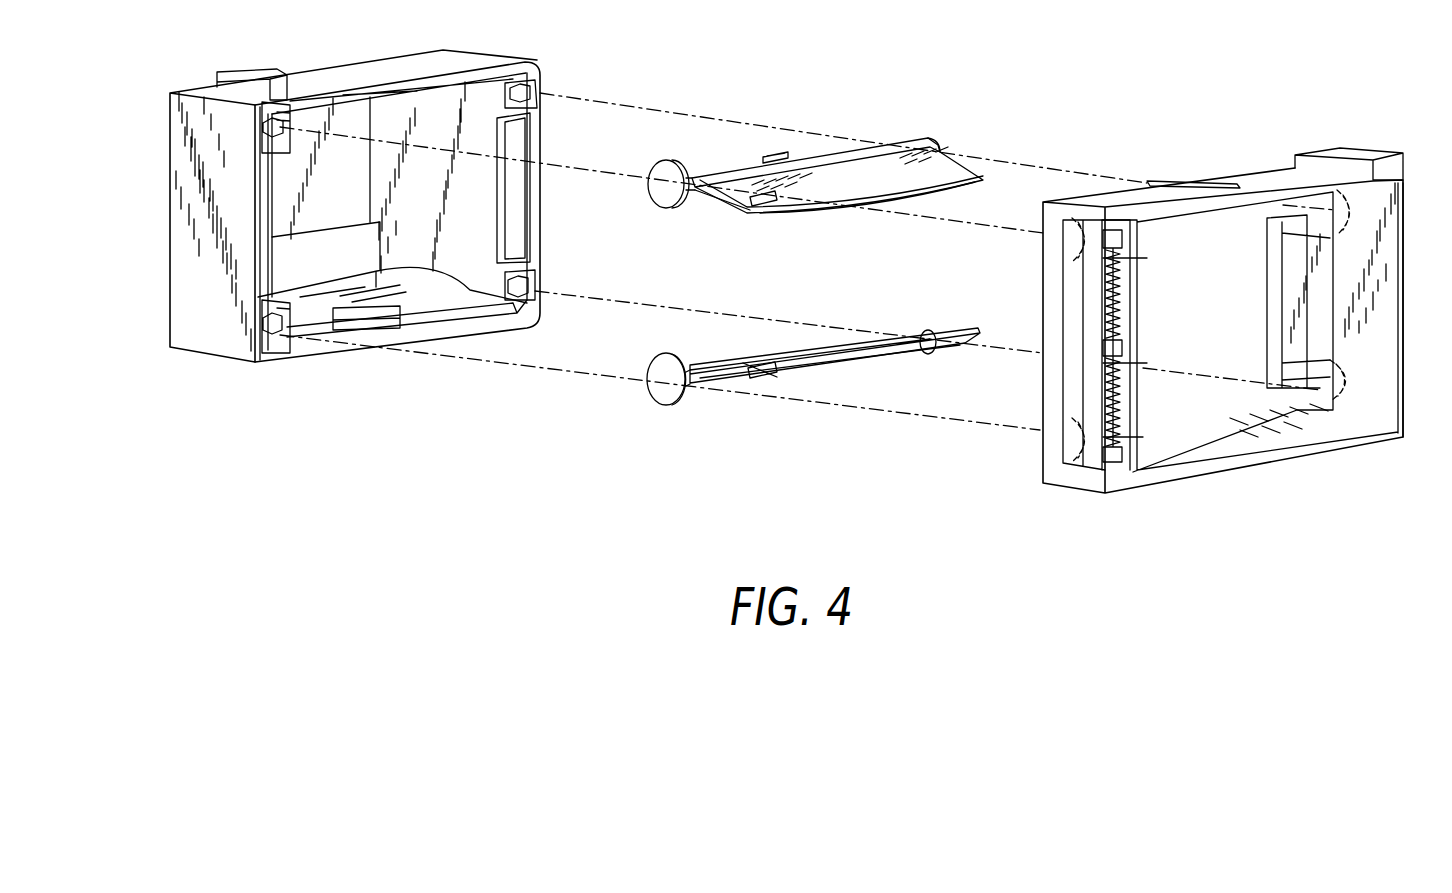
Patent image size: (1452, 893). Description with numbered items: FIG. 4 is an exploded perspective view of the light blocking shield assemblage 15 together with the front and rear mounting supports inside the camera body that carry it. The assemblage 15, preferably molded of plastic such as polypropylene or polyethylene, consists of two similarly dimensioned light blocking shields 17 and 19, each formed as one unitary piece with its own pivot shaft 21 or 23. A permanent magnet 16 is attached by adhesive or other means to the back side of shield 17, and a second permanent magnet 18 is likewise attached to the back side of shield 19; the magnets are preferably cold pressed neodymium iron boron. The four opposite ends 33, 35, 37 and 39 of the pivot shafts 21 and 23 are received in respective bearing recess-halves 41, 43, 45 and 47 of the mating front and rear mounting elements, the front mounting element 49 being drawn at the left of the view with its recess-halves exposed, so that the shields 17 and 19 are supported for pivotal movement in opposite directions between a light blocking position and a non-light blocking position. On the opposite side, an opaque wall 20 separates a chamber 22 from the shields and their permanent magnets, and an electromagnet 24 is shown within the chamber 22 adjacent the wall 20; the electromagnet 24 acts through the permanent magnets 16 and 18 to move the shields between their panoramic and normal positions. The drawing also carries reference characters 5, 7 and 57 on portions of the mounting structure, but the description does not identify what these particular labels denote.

The housing side wall 5 is at (1400, 347).
The housing top block 7 is at (1390, 300).
The light blocking shield assemblage 15 is at (833, 283).
The permanent magnet 16 is at (743, 207).
The light blocking shield 17 is at (937, 188).
The permanent magnet 18 is at (773, 377).
The light blocking shield 19 is at (948, 333).
The opaque wall 20 is at (1140, 493).
The pivot shaft 21 is at (905, 140).
The chamber 22 is at (1133, 400).
The pivot shaft 23 is at (873, 363).
The electromagnet 24 is at (1113, 300).
The end of pivot shaft 33 is at (663, 187).
The end of pivot shaft 35 is at (937, 142).
The end of pivot shaft 37 is at (663, 393).
The end of pivot shaft 39 is at (943, 333).
The bearing recess-half 41 is at (280, 126).
The bearing recess-half 43 is at (538, 92).
The bearing recess-half 45 is at (262, 346).
The bearing recess-half 47 is at (512, 290).
The front mounting element 49 is at (180, 288).
The tab block 57 is at (247, 72).